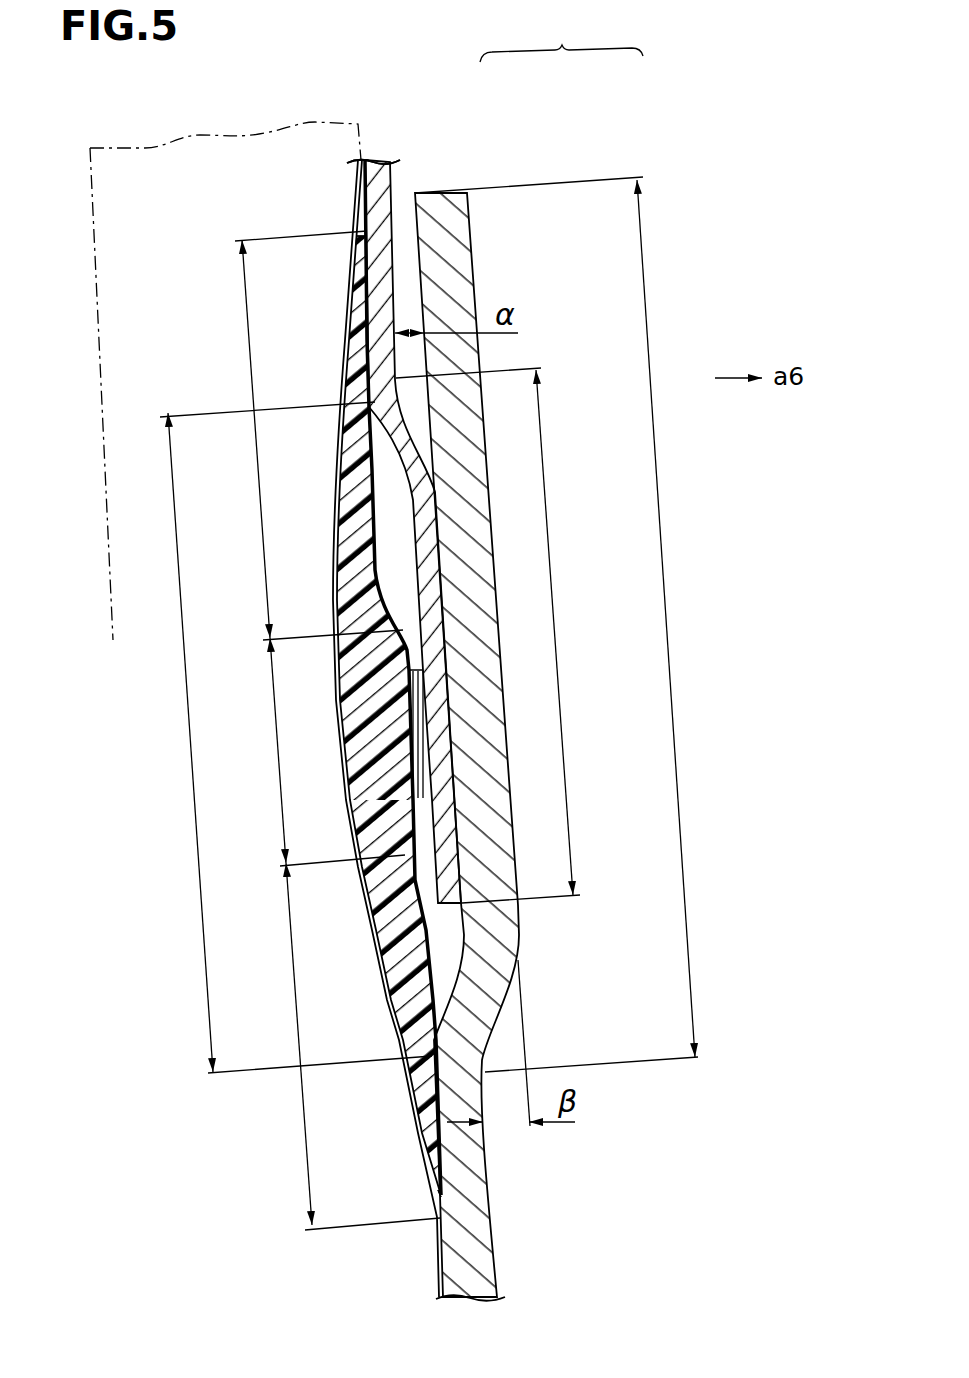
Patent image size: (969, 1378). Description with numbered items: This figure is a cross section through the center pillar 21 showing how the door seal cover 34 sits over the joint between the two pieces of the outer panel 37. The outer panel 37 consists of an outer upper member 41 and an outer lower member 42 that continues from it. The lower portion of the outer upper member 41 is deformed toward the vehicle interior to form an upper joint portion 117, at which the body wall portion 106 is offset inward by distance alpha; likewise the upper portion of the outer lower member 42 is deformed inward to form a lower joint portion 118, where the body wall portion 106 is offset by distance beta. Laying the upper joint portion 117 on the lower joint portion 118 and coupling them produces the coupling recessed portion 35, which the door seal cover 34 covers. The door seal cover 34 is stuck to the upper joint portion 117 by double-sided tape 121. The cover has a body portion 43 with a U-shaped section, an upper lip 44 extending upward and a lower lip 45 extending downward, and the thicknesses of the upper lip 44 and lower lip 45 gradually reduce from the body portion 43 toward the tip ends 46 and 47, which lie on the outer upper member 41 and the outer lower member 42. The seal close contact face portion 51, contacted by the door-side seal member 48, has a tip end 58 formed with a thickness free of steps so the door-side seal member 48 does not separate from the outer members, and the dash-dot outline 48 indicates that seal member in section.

The center pillar 21 is at (390, 126).
The outer panel 37 is at (561, 40).
The body wall portion 106 is at (376, 173).
The outer upper member 41 is at (396, 185).
The outer lower member 42 is at (478, 258).
The tip end portion 46 is at (365, 240).
The tip end portion 47 is at (434, 1197).
The front lower tip end 58 is at (439, 1193).
The door-side seal member 48 is at (88, 289).
The door seal cover 34 is at (329, 571).
The seal close contact face portion 51 is at (340, 497).
The upper lip 44 is at (240, 341).
The body portion 43 is at (275, 749).
The lower lip 45 is at (300, 1001).
The coupling recessed portion 35 is at (167, 725).
The upper joint portion 117 is at (554, 622).
The lower joint portion 118 is at (668, 632).
The double-sided tape 121 is at (447, 698).